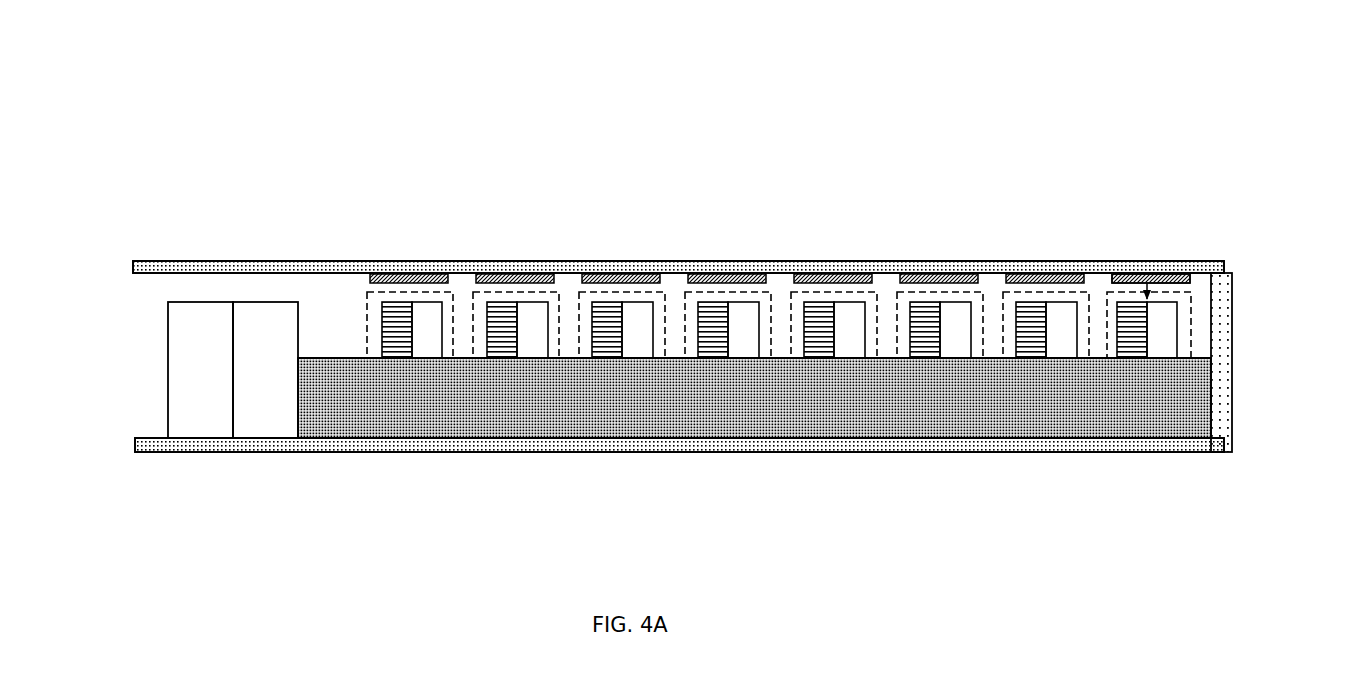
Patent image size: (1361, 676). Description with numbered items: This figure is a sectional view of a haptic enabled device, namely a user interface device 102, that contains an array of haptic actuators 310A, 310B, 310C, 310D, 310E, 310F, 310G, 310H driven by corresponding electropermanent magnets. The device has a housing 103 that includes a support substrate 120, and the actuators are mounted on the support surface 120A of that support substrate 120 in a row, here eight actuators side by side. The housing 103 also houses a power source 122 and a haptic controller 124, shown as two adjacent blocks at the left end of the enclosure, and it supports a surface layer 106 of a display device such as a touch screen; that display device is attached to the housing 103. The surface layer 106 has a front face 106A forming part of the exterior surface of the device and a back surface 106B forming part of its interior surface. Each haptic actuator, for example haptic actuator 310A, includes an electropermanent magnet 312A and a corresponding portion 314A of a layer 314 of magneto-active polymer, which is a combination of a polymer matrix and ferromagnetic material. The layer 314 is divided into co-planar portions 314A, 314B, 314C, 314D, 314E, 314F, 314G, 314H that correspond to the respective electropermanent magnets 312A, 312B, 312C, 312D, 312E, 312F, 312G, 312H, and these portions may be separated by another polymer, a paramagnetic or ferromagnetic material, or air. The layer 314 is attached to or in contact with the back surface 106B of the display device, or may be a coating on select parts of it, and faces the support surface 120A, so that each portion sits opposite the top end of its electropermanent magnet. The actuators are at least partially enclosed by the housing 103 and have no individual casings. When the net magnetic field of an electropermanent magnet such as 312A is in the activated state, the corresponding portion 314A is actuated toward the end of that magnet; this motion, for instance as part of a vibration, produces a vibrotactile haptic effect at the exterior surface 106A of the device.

The user interface device 102 is at (138, 113).
The housing 103 is at (1239, 279).
The surface layer 106 is at (258, 270).
The front face 106A is at (205, 258).
The back surface 106B is at (154, 271).
The support substrate 120 is at (1197, 385).
The support surface 120A is at (1211, 358).
The power source 122 is at (283, 422).
The haptic controller 124 is at (198, 428).
The haptic actuator 310A is at (1160, 373).
The haptic actuator 310B is at (1052, 373).
The haptic actuator 310C is at (952, 373).
The haptic actuator 310D is at (849, 373).
The haptic actuator 310E is at (739, 373).
The haptic actuator 310F is at (634, 373).
The haptic actuator 310G is at (523, 373).
The haptic actuator 310H is at (419, 373).
The electropermanent magnet 312A is at (1193, 327).
The electropermanent magnet 312B is at (1003, 335).
The electropermanent magnet 312C is at (897, 335).
The electropermanent magnet 312D is at (791, 335).
The electropermanent magnet 312E is at (685, 335).
The electropermanent magnet 312F is at (579, 335).
The electropermanent magnet 312G is at (473, 335).
The electropermanent magnet 312H is at (367, 335).
The layer of magneto-active polymer 314 is at (1200, 280).
The portion of magneto-active polymer layer 314A is at (1125, 278).
The portion of magneto-active polymer layer 314B is at (1037, 278).
The portion of magneto-active polymer layer 314C is at (930, 278).
The portion of magneto-active polymer layer 314D is at (837, 278).
The portion of magneto-active polymer layer 314E is at (740, 278).
The portion of magneto-active polymer layer 314F is at (650, 278).
The portion of magneto-active polymer layer 314G is at (547, 278).
The portion of magneto-active polymer layer 314H is at (438, 278).